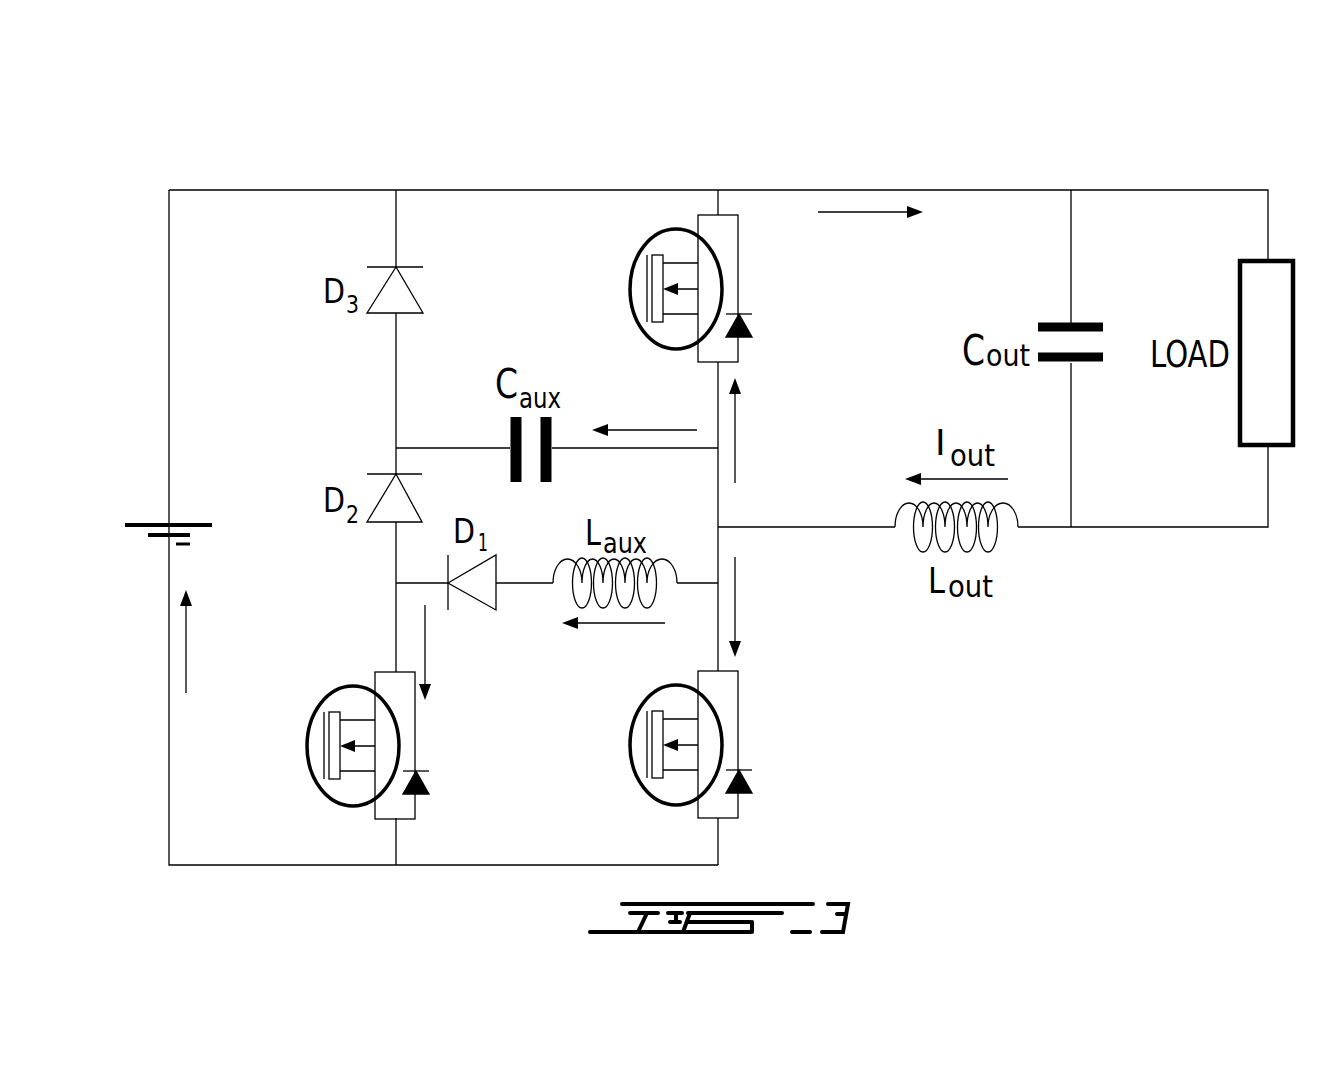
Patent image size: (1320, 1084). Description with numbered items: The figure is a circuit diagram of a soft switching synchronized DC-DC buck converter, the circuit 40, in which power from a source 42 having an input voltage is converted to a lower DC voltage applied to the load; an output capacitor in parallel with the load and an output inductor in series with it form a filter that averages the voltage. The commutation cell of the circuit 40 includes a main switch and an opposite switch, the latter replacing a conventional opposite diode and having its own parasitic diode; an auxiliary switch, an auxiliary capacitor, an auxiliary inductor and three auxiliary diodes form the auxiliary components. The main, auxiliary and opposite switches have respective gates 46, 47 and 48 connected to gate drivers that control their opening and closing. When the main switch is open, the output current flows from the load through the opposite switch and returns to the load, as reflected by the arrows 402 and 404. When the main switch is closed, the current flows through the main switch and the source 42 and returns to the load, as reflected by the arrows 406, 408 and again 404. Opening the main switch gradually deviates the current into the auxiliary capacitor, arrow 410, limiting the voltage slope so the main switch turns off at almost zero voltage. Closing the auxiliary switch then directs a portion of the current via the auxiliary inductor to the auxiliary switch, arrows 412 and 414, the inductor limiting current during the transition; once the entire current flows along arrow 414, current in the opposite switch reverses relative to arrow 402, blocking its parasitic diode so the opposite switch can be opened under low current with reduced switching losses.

The circuit 40 is at (1106, 139).
The source 42 is at (144, 522).
The gate 46 is at (648, 779).
The gate 47 is at (324, 779).
The gate 48 is at (647, 322).
The arrow 402 is at (735, 442).
The arrow 404 is at (858, 213).
The arrow 406 is at (735, 603).
The arrow 408 is at (186, 653).
The arrow 410 is at (648, 430).
The arrow 412 is at (612, 623).
The arrow 414 is at (425, 652).